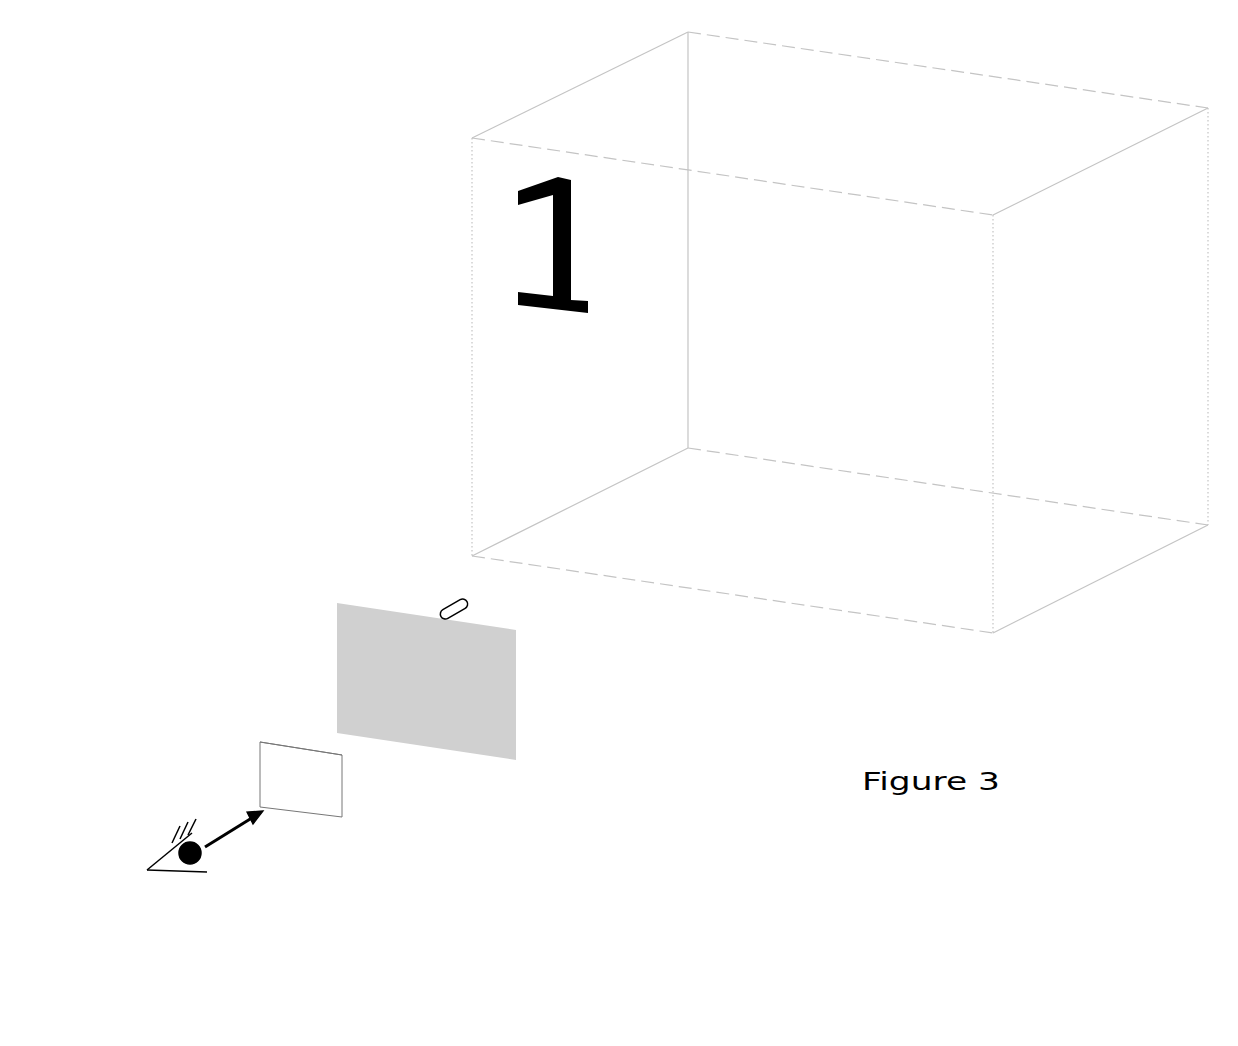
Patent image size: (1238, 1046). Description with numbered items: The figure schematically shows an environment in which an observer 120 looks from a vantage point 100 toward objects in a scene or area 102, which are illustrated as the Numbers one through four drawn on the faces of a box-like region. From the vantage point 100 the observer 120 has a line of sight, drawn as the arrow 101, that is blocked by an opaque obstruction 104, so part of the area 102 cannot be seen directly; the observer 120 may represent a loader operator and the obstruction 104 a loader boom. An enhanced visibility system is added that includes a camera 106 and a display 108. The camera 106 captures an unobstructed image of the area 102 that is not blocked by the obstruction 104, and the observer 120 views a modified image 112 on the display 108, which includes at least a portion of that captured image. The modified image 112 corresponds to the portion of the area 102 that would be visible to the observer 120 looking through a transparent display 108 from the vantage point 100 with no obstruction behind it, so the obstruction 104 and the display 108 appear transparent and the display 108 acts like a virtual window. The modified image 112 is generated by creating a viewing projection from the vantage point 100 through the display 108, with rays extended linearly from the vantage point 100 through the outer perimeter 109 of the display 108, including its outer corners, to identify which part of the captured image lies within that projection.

The vantage point 100 is at (202, 856).
The line of sight 101 is at (228, 835).
The scene or area 102 is at (1090, 120).
The opaque obstruction 104 is at (478, 739).
The camera 106 is at (452, 608).
The display 108 is at (356, 795).
The outer perimeter 109 is at (277, 743).
The modified image 112 is at (317, 802).
The observer 120 is at (139, 780).